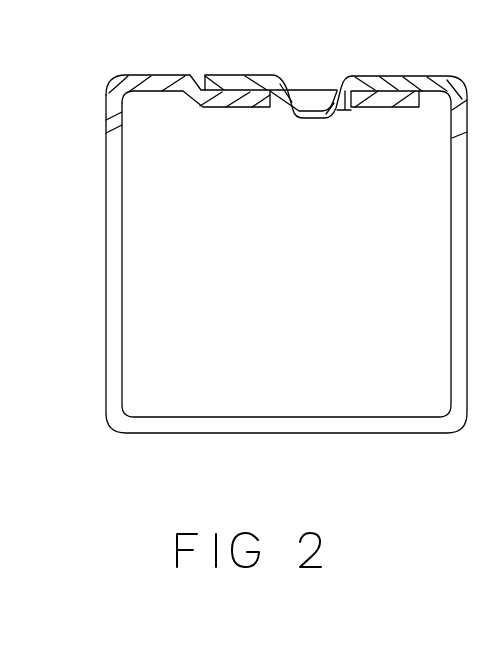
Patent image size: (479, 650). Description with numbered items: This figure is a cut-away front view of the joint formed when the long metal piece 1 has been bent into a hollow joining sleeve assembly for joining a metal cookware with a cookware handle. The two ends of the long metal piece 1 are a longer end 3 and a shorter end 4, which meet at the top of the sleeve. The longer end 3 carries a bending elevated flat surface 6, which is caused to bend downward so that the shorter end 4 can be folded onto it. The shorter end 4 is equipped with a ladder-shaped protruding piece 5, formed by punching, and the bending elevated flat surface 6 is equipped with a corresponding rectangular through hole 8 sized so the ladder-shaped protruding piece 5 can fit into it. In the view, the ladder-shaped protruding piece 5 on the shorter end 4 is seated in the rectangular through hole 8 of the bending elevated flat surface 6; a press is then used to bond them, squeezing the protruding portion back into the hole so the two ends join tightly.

The long metal piece 1 is at (278, 434).
The longer end 3 is at (161, 75).
The shorter end 4 is at (247, 76).
The ladder-shaped protruding piece 5 is at (295, 119).
The bending elevated flat surface 6 is at (380, 108).
The rectangular through hole 8 is at (344, 111).